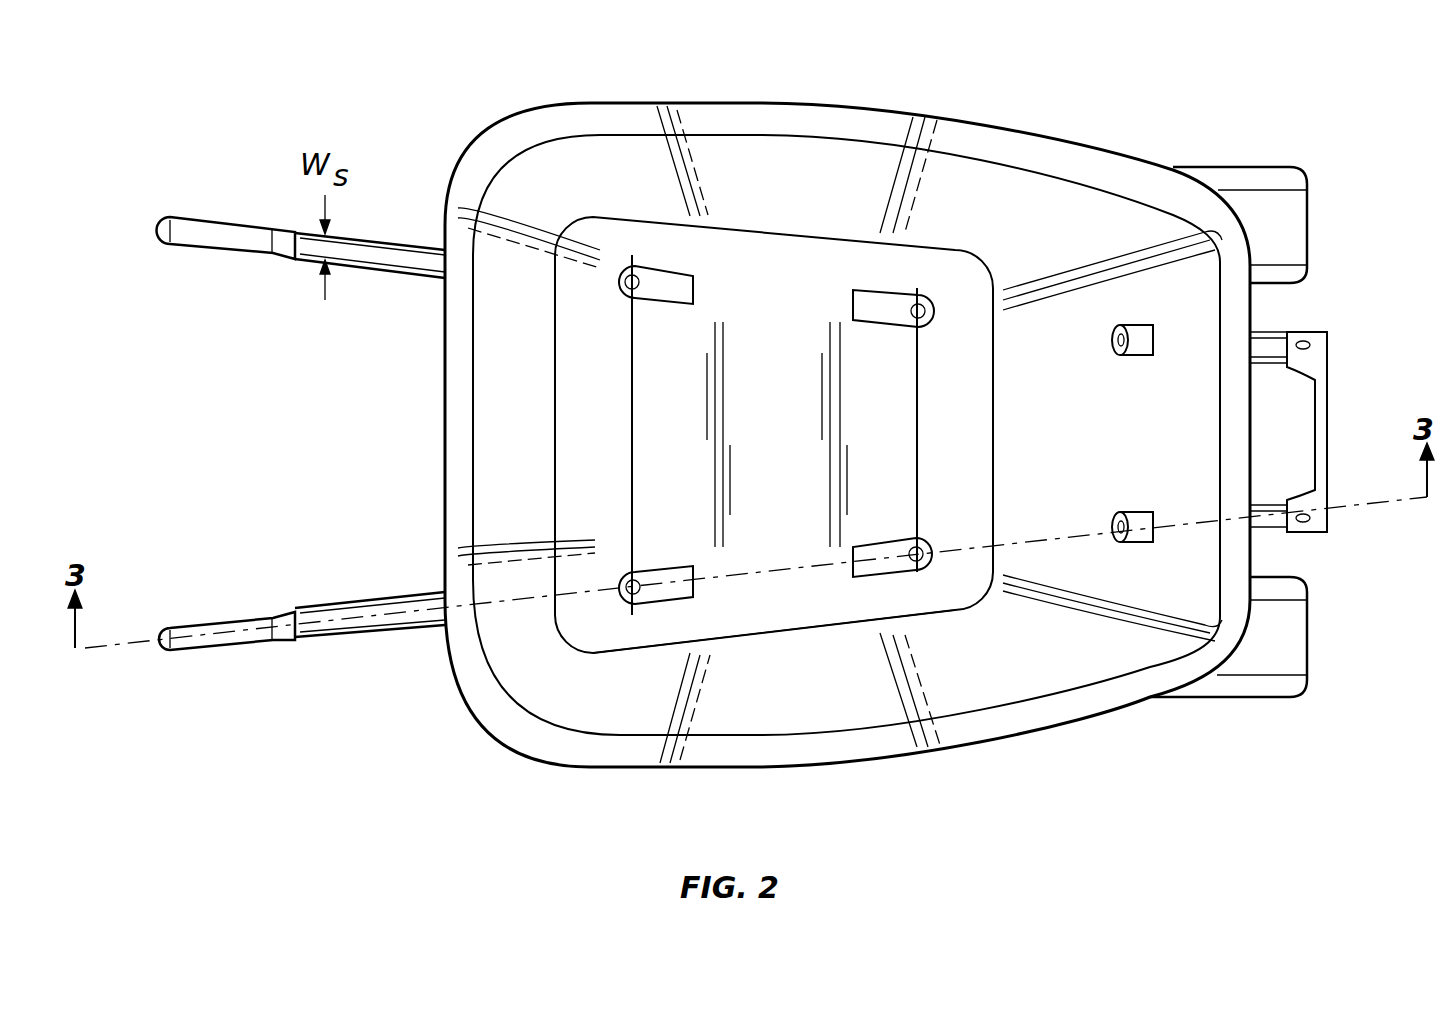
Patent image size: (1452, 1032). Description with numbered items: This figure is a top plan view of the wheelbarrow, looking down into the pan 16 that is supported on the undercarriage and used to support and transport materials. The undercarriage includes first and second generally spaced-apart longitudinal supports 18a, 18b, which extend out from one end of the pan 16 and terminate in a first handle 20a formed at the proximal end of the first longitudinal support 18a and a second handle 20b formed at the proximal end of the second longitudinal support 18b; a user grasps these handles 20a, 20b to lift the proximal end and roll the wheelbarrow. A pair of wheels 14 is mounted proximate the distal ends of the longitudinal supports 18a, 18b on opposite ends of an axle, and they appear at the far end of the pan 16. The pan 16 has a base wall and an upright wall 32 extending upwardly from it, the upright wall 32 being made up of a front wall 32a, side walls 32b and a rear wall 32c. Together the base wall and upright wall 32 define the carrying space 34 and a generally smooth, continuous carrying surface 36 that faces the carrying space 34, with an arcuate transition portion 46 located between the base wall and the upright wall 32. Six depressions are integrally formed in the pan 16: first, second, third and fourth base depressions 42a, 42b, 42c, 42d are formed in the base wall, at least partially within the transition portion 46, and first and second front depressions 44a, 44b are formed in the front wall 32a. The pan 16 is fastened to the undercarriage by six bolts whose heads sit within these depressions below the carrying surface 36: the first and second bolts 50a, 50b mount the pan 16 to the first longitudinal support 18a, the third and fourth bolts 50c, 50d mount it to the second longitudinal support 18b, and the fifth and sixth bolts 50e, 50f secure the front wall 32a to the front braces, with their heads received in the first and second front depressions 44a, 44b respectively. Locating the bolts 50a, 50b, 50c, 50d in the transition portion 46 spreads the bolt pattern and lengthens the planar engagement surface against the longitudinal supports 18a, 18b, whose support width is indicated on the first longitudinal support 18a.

The wheel 14 is at (1297, 213).
The pan 16 is at (1112, 720).
The first longitudinal support 18a is at (398, 264).
The second longitudinal support 18b is at (398, 633).
The first handle 20a is at (217, 243).
The second handle 20b is at (217, 650).
The upright wall 32 is at (740, 150).
The front wall 32a is at (1183, 428).
The side wall 32b is at (880, 157).
The rear wall 32c is at (500, 478).
The carrying space 34 is at (807, 160).
The carrying surface 36 is at (802, 433).
The first base depression 42a is at (893, 294).
The second base depression 42b is at (679, 270).
The third base depression 42c is at (893, 580).
The fourth base depression 42d is at (678, 604).
The first front depression 44a is at (1138, 360).
The second front depression 44b is at (1138, 506).
The transition portion 46 is at (803, 622).
The first bolt 50a is at (952, 250).
The second bolt 50b is at (632, 272).
The third bolt 50c is at (917, 570).
The fourth bolt 50d is at (633, 605).
The fifth bolt 50e is at (1113, 338).
The sixth bolt 50f is at (1113, 522).